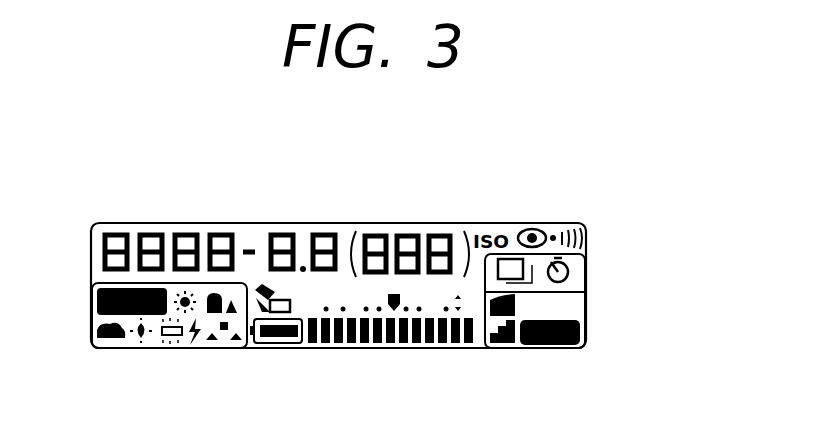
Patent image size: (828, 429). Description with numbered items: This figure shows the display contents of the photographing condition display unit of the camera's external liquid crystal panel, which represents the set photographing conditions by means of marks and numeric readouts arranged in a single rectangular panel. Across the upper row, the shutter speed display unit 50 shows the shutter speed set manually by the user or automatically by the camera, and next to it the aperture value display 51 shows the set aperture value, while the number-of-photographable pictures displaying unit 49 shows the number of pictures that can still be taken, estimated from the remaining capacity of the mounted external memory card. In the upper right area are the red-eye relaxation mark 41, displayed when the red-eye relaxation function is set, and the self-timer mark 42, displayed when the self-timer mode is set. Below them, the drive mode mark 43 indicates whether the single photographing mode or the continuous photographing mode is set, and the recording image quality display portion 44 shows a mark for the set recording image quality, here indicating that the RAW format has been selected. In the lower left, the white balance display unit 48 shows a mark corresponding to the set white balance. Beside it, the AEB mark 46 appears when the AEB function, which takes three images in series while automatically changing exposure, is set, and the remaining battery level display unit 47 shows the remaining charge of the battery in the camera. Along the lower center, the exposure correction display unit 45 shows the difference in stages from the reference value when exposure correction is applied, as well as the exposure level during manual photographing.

The red-eye relaxation mark 41 is at (530, 229).
The self-timer mark 42 is at (585, 223).
The drive mode mark 43 is at (505, 258).
The recording image quality display portion 44 is at (583, 353).
The exposure correction display unit 45 is at (477, 353).
The AEB mark 46 is at (262, 282).
The remaining battery level display unit 47 is at (267, 345).
The white balance display unit 48 is at (245, 353).
The number-of-photographable pictures displaying unit 49 is at (410, 232).
The shutter speed display unit 50 is at (152, 232).
The aperture value display 51 is at (292, 232).